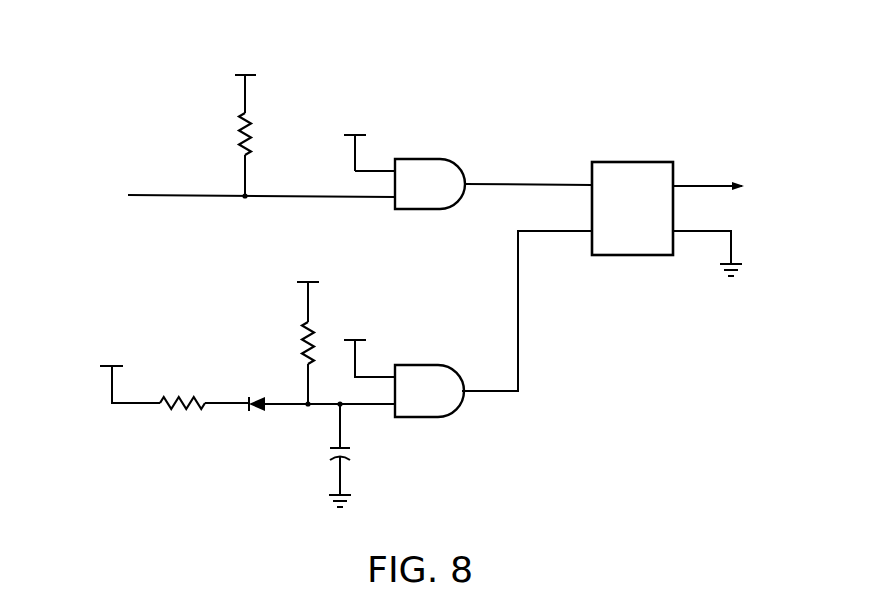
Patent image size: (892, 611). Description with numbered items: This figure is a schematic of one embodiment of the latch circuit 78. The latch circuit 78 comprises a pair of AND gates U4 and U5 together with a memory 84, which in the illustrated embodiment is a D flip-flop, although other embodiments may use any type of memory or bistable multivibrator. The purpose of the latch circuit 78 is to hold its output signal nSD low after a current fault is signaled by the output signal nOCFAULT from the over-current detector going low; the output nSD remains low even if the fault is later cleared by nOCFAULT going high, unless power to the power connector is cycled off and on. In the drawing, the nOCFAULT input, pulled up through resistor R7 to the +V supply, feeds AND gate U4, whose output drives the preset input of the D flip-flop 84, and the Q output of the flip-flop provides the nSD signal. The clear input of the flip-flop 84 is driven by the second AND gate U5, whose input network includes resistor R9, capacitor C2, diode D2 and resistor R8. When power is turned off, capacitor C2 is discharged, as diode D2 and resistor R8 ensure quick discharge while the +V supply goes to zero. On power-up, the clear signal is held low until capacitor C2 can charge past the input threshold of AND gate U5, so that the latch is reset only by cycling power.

The latch circuit 78 is at (540, 104).
The memory 84 is at (633, 162).
The element R7 is at (254, 126).
The element R8 is at (182, 391).
The element R9 is at (298, 332).
The element C2 is at (352, 455).
The element D2 is at (256, 392).
The AND gate U4 is at (468, 160).
The AND gate U5 is at (404, 367).